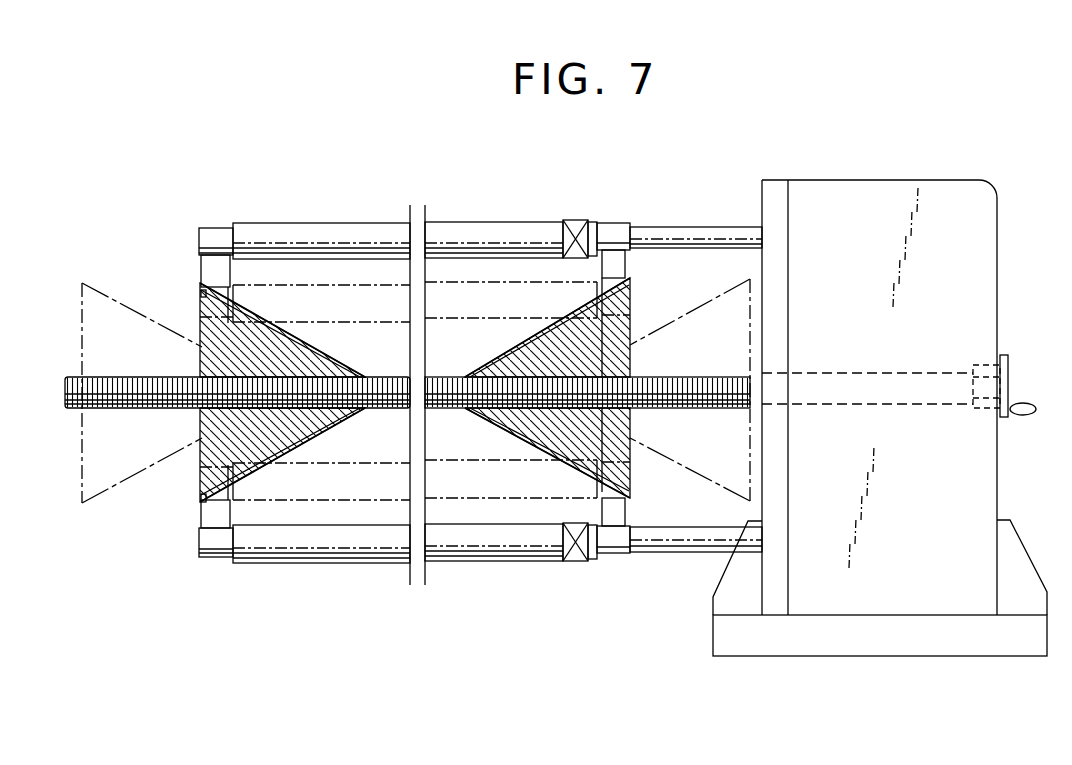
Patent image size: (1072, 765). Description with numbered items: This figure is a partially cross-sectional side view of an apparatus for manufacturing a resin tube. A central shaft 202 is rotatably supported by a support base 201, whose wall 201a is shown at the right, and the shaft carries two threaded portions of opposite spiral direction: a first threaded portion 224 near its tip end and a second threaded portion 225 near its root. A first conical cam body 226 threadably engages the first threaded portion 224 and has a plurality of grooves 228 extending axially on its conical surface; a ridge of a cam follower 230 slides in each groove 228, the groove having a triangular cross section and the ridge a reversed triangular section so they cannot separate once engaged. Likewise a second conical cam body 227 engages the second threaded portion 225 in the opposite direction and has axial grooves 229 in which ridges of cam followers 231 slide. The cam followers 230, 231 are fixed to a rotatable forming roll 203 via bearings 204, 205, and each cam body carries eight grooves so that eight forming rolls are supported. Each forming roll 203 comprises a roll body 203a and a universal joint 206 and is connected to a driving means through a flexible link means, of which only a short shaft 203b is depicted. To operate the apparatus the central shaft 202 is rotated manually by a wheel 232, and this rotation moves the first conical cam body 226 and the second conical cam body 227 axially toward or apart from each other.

The support base 201 is at (1005, 188).
The frame side wall 201a is at (767, 202).
The central shaft 202 is at (442, 386).
The rotatable forming roll 203 is at (467, 283).
The roll body 203a is at (289, 229).
The short shaft 203b is at (703, 229).
The bearing 204 is at (200, 241).
The bearing 205 is at (620, 224).
The universal joint 206 is at (575, 230).
The first threaded portion 224 is at (363, 410).
The second threaded portion 225 is at (462, 410).
The first conical cam body 226 is at (82, 327).
The second conical cam body 227 is at (632, 300).
The groove 228 is at (258, 318).
The groove 229 is at (573, 310).
The cam follower 230 is at (212, 268).
The cam follower 231 is at (616, 266).
The wheel 232 is at (1003, 362).